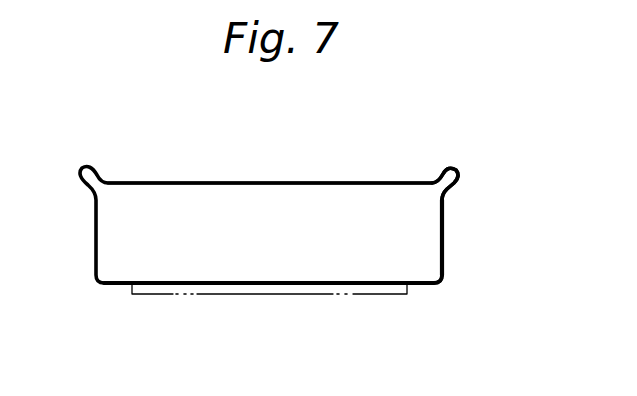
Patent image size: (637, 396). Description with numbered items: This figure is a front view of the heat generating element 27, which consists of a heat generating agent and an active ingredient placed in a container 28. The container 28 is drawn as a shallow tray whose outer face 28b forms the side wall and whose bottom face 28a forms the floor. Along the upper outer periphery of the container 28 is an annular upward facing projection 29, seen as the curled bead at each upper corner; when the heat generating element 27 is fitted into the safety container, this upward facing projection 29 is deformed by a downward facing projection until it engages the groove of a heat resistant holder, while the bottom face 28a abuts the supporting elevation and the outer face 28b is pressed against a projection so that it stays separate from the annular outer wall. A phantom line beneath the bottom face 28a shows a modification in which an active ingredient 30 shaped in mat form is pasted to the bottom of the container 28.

The heat generating element 27 is at (338, 178).
The container 28 is at (373, 195).
The bottom face of the container 28a is at (430, 284).
The outer face of the container 28b is at (445, 249).
The annular upward facing projection 29 is at (457, 175).
The active ingredient 30 is at (163, 290).